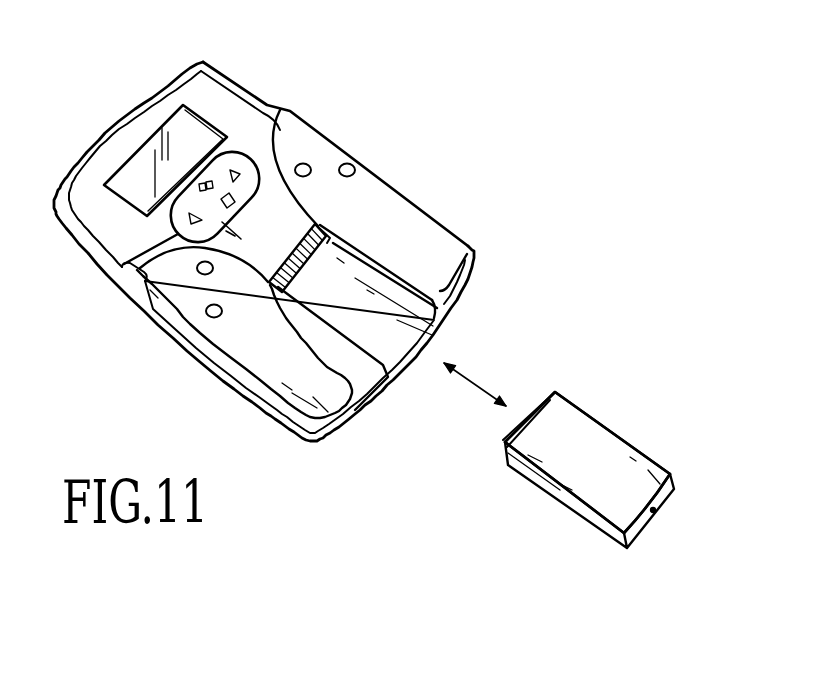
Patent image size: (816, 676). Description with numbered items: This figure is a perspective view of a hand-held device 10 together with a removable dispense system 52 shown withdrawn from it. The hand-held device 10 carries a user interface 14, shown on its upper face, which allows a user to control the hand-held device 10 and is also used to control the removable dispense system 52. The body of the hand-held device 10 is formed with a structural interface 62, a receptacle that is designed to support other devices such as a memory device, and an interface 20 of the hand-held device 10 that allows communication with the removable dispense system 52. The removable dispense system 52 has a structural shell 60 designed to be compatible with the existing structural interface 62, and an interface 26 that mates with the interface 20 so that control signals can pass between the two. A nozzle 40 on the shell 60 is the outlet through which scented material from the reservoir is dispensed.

The hand-held device 10 is at (423, 113).
The user interface 14 is at (193, 133).
The interface 20 is at (332, 245).
The structural interface 62 is at (398, 303).
The removable dispense system 52 is at (608, 380).
The interface 26 is at (535, 398).
The shell 60 is at (628, 438).
The nozzle 40 is at (656, 512).